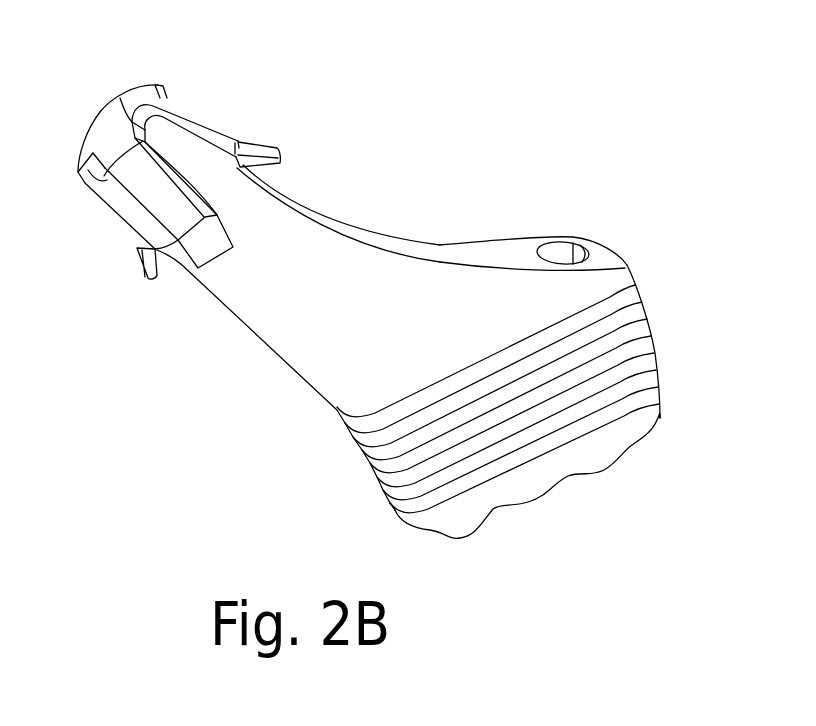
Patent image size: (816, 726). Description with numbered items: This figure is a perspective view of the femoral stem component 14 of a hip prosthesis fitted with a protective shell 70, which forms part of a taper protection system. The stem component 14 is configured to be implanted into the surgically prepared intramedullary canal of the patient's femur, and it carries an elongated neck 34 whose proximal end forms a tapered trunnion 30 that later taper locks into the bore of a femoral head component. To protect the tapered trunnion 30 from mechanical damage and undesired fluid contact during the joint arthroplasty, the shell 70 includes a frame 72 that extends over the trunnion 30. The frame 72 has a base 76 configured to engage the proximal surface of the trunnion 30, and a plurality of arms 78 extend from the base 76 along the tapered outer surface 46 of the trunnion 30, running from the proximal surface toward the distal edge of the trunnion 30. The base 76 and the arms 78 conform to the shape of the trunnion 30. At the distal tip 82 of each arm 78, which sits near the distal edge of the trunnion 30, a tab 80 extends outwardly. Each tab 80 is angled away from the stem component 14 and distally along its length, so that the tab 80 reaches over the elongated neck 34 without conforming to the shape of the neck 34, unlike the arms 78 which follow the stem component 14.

The protective shell 70 is at (366, 79).
The base 76 is at (102, 113).
The frame 72 is at (162, 92).
The tapered outer surface 46 is at (187, 142).
The distal tip 82 is at (240, 140).
The tab 80 is at (263, 143).
The arms 78 is at (167, 197).
The trunnion 30 is at (123, 212).
The elongated neck 34 is at (327, 247).
The stem component 14 is at (510, 254).